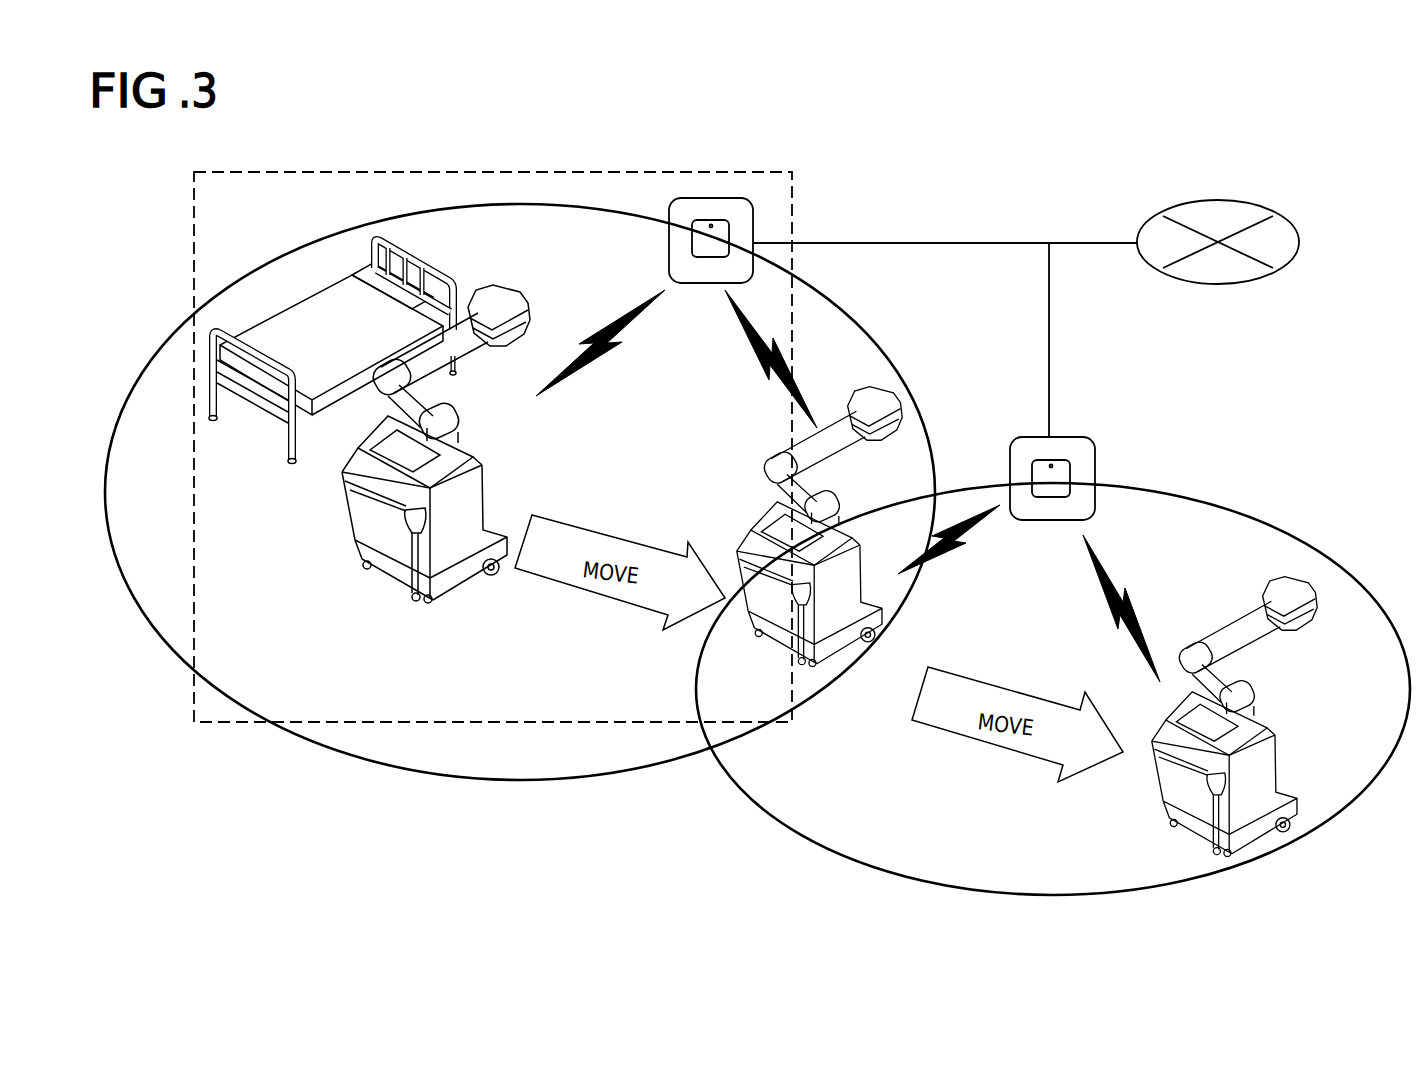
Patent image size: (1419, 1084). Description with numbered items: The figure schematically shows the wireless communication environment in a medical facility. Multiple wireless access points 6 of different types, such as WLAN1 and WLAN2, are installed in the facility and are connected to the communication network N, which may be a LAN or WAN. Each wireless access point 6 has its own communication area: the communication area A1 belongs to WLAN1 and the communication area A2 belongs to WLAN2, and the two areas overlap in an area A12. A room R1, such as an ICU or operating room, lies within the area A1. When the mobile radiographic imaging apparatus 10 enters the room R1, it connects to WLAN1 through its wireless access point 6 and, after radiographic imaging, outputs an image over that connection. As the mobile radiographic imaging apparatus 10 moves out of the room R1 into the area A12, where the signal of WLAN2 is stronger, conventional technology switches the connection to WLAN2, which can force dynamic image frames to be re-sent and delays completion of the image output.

The mobile radiographic imaging apparatus 10 is at (348, 517).
The wireless access point 6 is at (720, 198).
The communication network N is at (1245, 212).
The room R1 is at (278, 168).
The communication area A1 is at (487, 767).
The communication area A2 is at (933, 858).
The overlapping area A12 is at (733, 692).